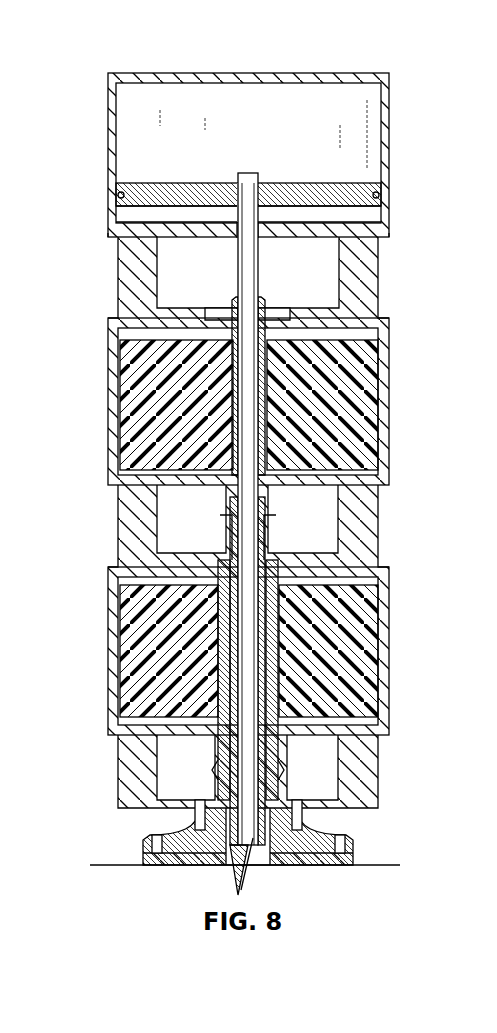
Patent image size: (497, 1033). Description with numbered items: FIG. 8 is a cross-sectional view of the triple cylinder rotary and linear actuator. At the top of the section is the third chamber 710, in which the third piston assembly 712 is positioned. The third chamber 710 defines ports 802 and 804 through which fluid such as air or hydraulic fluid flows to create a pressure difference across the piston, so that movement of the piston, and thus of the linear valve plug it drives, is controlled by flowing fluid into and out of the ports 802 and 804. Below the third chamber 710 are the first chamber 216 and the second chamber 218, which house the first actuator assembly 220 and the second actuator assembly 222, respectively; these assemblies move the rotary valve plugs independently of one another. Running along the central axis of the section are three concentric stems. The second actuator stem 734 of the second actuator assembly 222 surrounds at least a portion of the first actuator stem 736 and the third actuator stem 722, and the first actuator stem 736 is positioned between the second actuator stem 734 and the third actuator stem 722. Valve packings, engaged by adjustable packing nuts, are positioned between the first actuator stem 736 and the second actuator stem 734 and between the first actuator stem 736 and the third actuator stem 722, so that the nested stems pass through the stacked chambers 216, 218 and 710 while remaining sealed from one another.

The port 804 is at (386, 101).
The third piston assembly 712 is at (131, 157).
The third chamber 710 is at (114, 210).
The port 802 is at (386, 212).
The third actuator stem 722 is at (250, 273).
The first actuator assembly 220 is at (372, 375).
The first actuator stem 736 is at (234, 412).
The first chamber 216 is at (386, 436).
The second actuator assembly 222 is at (364, 620).
The second actuator stem 734 is at (222, 665).
The second chamber 218 is at (375, 704).